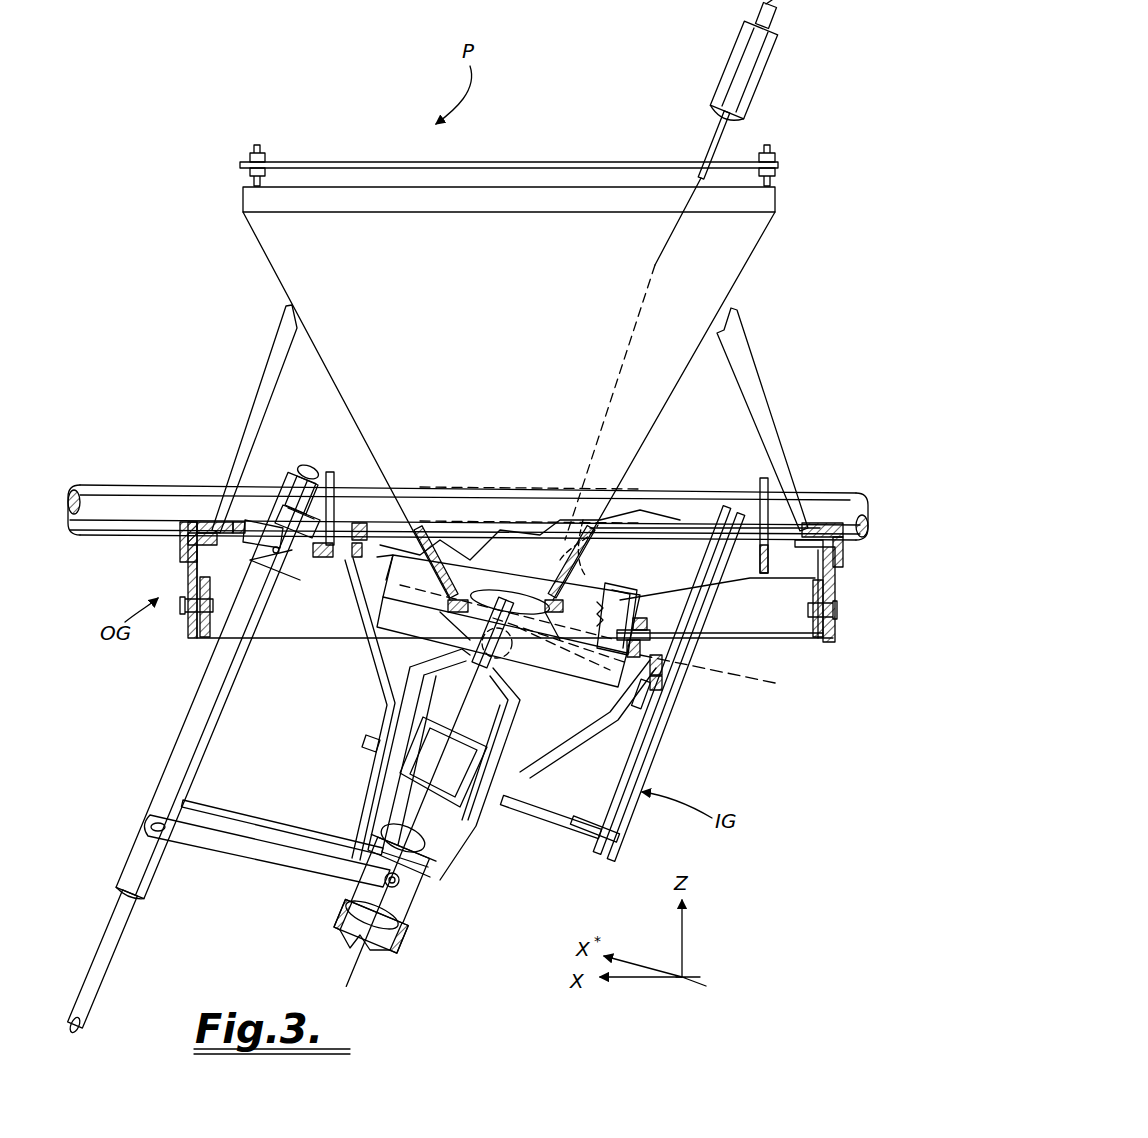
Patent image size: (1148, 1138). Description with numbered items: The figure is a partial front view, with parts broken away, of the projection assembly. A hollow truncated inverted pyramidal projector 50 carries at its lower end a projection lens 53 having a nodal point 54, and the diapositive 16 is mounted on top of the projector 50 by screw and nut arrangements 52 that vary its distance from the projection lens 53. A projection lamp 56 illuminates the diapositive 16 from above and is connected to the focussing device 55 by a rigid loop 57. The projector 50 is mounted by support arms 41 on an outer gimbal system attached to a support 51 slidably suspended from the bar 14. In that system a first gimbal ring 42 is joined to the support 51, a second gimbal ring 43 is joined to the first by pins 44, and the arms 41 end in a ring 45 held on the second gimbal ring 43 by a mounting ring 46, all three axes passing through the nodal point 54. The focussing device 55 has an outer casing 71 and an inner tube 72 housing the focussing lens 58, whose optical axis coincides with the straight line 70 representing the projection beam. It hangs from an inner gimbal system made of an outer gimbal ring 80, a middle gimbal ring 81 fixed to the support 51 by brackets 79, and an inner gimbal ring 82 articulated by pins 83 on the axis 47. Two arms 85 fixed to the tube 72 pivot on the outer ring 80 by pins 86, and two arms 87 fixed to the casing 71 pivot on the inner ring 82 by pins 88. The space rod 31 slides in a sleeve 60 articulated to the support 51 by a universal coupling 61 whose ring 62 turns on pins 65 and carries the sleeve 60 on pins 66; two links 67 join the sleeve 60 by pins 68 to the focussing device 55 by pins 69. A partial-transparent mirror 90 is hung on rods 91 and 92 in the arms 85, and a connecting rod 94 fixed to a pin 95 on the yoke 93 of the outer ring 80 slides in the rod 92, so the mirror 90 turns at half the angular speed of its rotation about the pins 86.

The bar 14 is at (92, 490).
The diapositive 16 is at (328, 162).
The space rod 31 is at (120, 937).
The support arms 41 is at (278, 385).
The first gimbal ring 42 is at (205, 640).
The second gimbal ring 43 is at (186, 580).
The pins 44 is at (190, 612).
The ring 45 is at (212, 520).
The mounting ring 46 is at (180, 546).
The axis of rotation 47 is at (780, 684).
The projector 50 is at (272, 246).
The support 51 is at (640, 548).
The screw and nut arrangements 52 is at (252, 146).
The projection lens 53 is at (455, 565).
The nodal point 54 is at (508, 555).
The focussing device 55 is at (422, 918).
The projection lamp 56 is at (732, 52).
The rigid loop 57 is at (708, 133).
The focussing lens 58 is at (340, 931).
The sleeve 60 is at (190, 718).
The universal coupling 61 is at (288, 470).
The ring 62 is at (270, 617).
The pins 65 is at (330, 575).
The pins 66 is at (260, 562).
The links 67 is at (246, 830).
The pins 68 is at (150, 828).
The pins 69 is at (384, 880).
The straight line 70 is at (640, 305).
The outer casing 71 is at (432, 886).
The inner tube 72 is at (392, 956).
The brackets 79 is at (586, 500).
The outer gimbal ring 80 is at (660, 694).
The middle gimbal ring 81 is at (372, 640).
The inner gimbal ring 82 is at (610, 596).
The pins 83 is at (645, 632).
The arms 85 is at (358, 706).
The pins 86 is at (342, 520).
The arms 87 is at (520, 717).
The pins 88 is at (520, 662).
The partial-transparent mirror 90 is at (455, 792).
The rod 91 is at (378, 745).
The rod 92 is at (566, 816).
The yoke 93 is at (696, 571).
The connecting rod 94 is at (616, 834).
The pin 95 is at (740, 500).